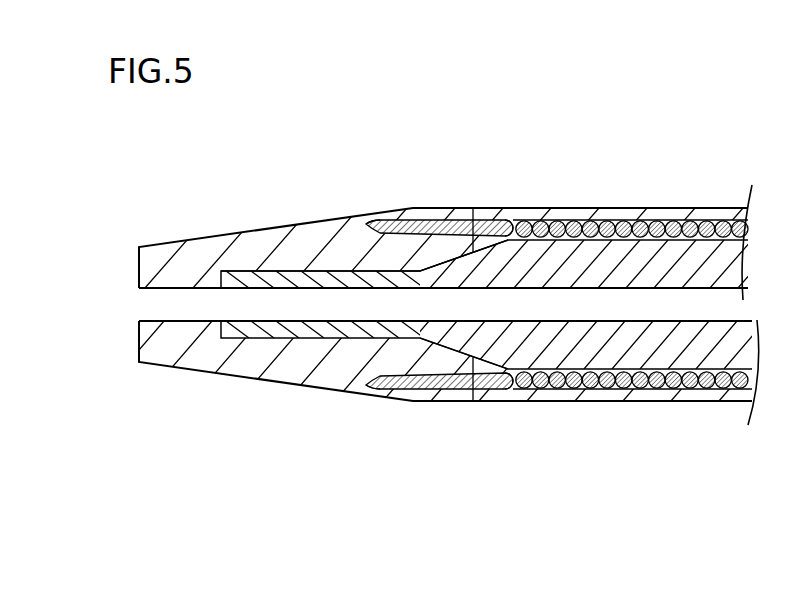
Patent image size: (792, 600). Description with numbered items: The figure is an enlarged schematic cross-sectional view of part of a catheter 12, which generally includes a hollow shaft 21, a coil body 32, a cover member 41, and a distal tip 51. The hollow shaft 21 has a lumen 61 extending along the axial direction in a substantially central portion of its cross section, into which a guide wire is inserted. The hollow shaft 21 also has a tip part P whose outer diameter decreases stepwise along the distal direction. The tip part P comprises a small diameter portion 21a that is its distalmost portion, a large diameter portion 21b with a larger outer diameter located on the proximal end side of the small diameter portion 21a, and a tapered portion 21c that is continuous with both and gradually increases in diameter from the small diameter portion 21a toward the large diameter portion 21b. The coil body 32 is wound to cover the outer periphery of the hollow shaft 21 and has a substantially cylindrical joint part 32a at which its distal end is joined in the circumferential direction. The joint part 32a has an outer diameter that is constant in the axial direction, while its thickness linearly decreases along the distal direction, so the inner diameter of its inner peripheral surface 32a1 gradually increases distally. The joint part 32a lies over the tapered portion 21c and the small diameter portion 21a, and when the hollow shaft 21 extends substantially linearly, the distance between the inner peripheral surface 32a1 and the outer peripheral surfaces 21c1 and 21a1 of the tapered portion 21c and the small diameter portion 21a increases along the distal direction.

The catheter 12 is at (705, 108).
The hollow shaft 21 is at (468, 302).
The small diameter portion 21a is at (253, 378).
The outer peripheral surface of the small diameter portion 21a1 is at (268, 270).
The large diameter portion 21b is at (607, 357).
The tapered portion 21c is at (437, 350).
The outer peripheral surface of the tapered portion 21c1 is at (400, 250).
The coil body 32 is at (470, 260).
The joint part 32a is at (502, 212).
The inner peripheral surface of the joint part 32a1 is at (392, 243).
The cover member 41 is at (695, 217).
The distal tip 51 is at (193, 372).
The lumen 61 is at (217, 300).
The tip part P is at (593, 157).